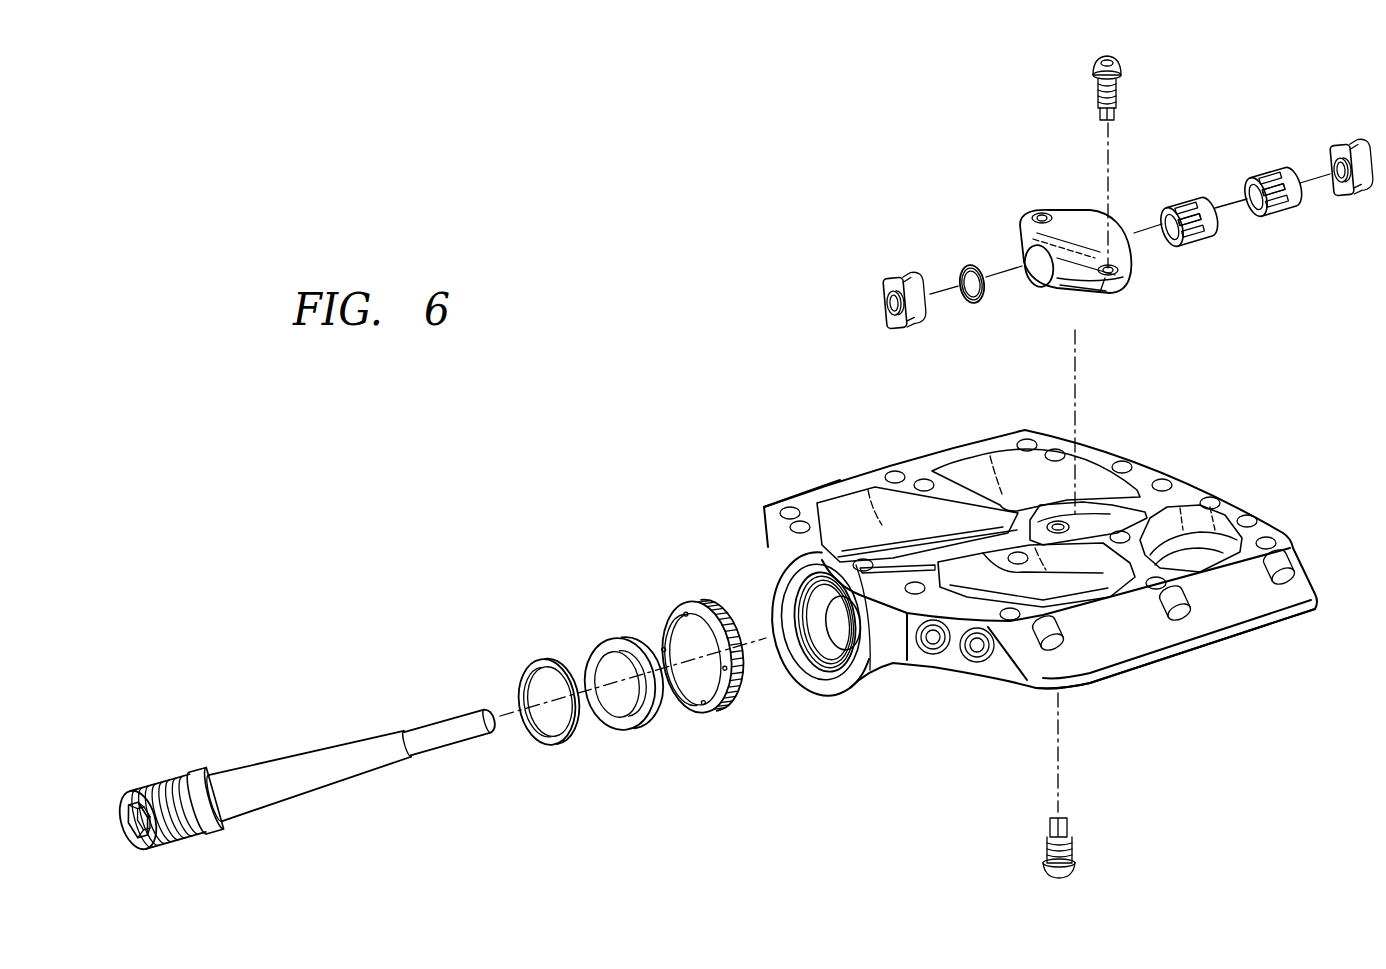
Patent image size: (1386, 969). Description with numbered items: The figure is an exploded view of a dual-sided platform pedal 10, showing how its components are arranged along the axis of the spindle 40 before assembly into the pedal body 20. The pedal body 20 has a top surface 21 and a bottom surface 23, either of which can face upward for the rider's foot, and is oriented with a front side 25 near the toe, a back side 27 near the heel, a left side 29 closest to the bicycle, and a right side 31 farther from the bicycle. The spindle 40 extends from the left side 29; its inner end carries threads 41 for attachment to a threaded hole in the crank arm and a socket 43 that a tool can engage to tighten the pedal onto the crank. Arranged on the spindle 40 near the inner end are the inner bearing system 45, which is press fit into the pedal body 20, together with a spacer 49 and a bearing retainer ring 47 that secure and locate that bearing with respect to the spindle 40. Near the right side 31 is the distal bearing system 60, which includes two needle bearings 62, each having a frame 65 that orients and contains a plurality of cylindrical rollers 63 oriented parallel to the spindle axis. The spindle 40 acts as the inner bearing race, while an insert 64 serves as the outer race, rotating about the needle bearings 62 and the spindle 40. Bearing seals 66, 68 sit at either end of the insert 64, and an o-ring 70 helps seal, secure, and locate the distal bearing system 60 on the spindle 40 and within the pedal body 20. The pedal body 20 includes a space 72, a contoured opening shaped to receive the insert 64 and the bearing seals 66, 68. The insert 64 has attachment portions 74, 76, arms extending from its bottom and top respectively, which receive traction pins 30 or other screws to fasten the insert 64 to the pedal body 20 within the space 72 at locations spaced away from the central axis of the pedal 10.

The pedal 10 is at (596, 238).
The pedal body 20 is at (1160, 466).
The top surface 21 is at (932, 465).
The bottom surface 23 is at (957, 672).
The front side 25 is at (807, 490).
The back side 27 is at (1297, 612).
The left side 29 is at (813, 677).
The traction pins 30 is at (1121, 68).
The right side 31 is at (1230, 503).
The spindle 40 is at (252, 770).
The threads 41 is at (152, 783).
The socket 43 is at (128, 847).
The inner bearing system 45 is at (616, 638).
The bearing retainer ring 47 is at (693, 604).
The spacer 49 is at (539, 660).
The distal bearing system 60 is at (953, 122).
The needle bearings 62 is at (1178, 208).
The rollers 63 is at (1197, 233).
The insert 64 is at (1077, 288).
The frame 65 is at (1170, 238).
The bearing seal 66 is at (888, 276).
The bearing seal 68 is at (1357, 148).
The o-ring 70 is at (982, 300).
The space 72 is at (1086, 528).
The attachment portion 74 is at (1115, 286).
The attachment portion 76 is at (1027, 216).